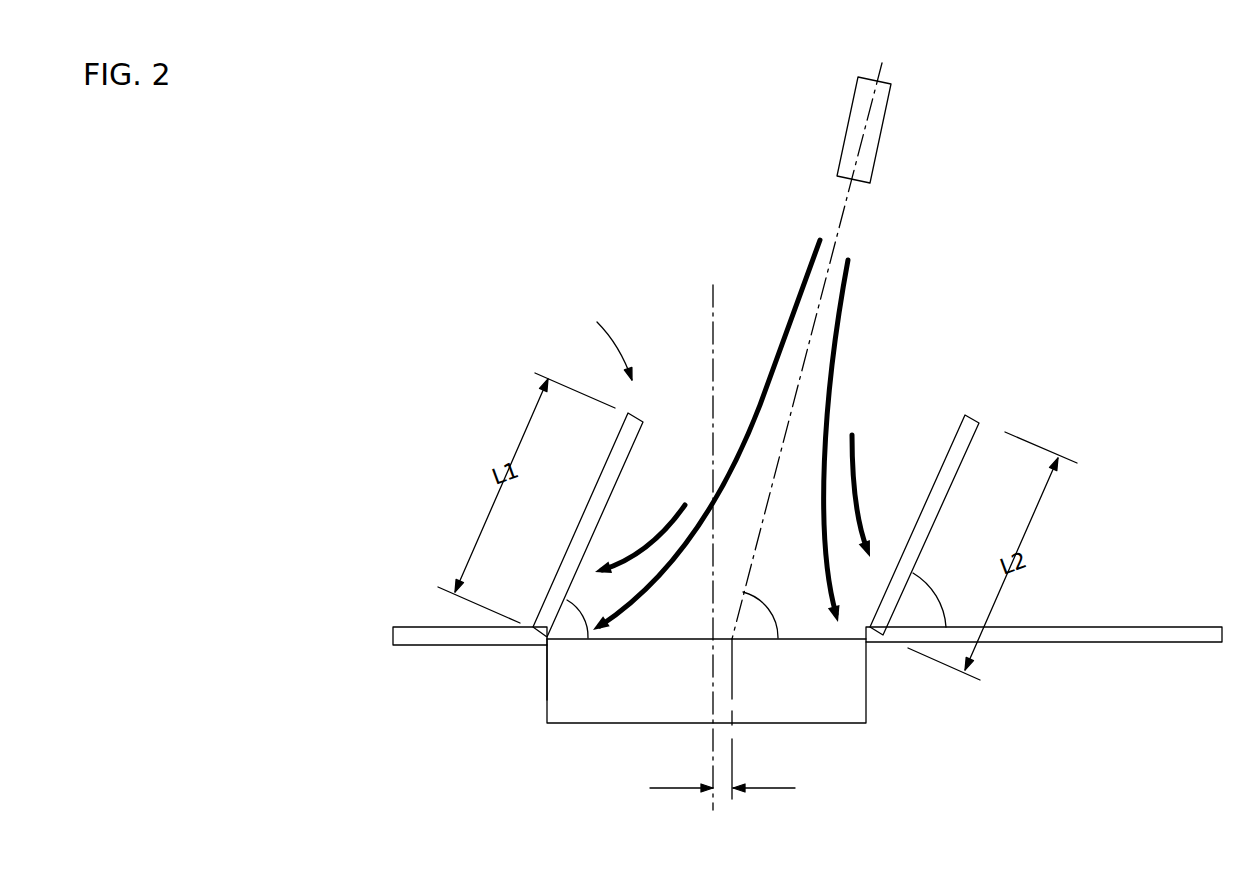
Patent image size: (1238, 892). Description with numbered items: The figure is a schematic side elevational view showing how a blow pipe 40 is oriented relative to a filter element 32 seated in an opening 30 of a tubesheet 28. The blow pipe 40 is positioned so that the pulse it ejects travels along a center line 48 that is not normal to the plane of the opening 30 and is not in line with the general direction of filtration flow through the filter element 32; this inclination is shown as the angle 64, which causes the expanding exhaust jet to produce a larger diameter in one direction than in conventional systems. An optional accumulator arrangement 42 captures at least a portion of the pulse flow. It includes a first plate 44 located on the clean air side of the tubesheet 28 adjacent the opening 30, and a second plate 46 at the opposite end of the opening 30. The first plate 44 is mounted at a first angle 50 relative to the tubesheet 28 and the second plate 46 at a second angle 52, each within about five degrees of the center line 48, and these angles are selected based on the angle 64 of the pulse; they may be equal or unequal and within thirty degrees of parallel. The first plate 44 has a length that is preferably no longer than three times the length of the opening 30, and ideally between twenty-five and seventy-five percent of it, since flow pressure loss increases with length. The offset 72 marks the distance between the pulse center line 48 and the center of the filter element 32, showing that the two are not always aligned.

The tubesheet 28 is at (423, 627).
The opening 30 is at (547, 643).
The filter element 32 is at (852, 707).
The blow pipe 40 is at (878, 138).
The accumulator arrangement 42 is at (598, 340).
The first plate 44 is at (602, 480).
The second plate 46 is at (967, 455).
The center line 48 is at (793, 413).
The first angle 50 is at (568, 602).
The second angle 52 is at (927, 582).
The angle 64 is at (748, 594).
The offset 72 is at (738, 790).